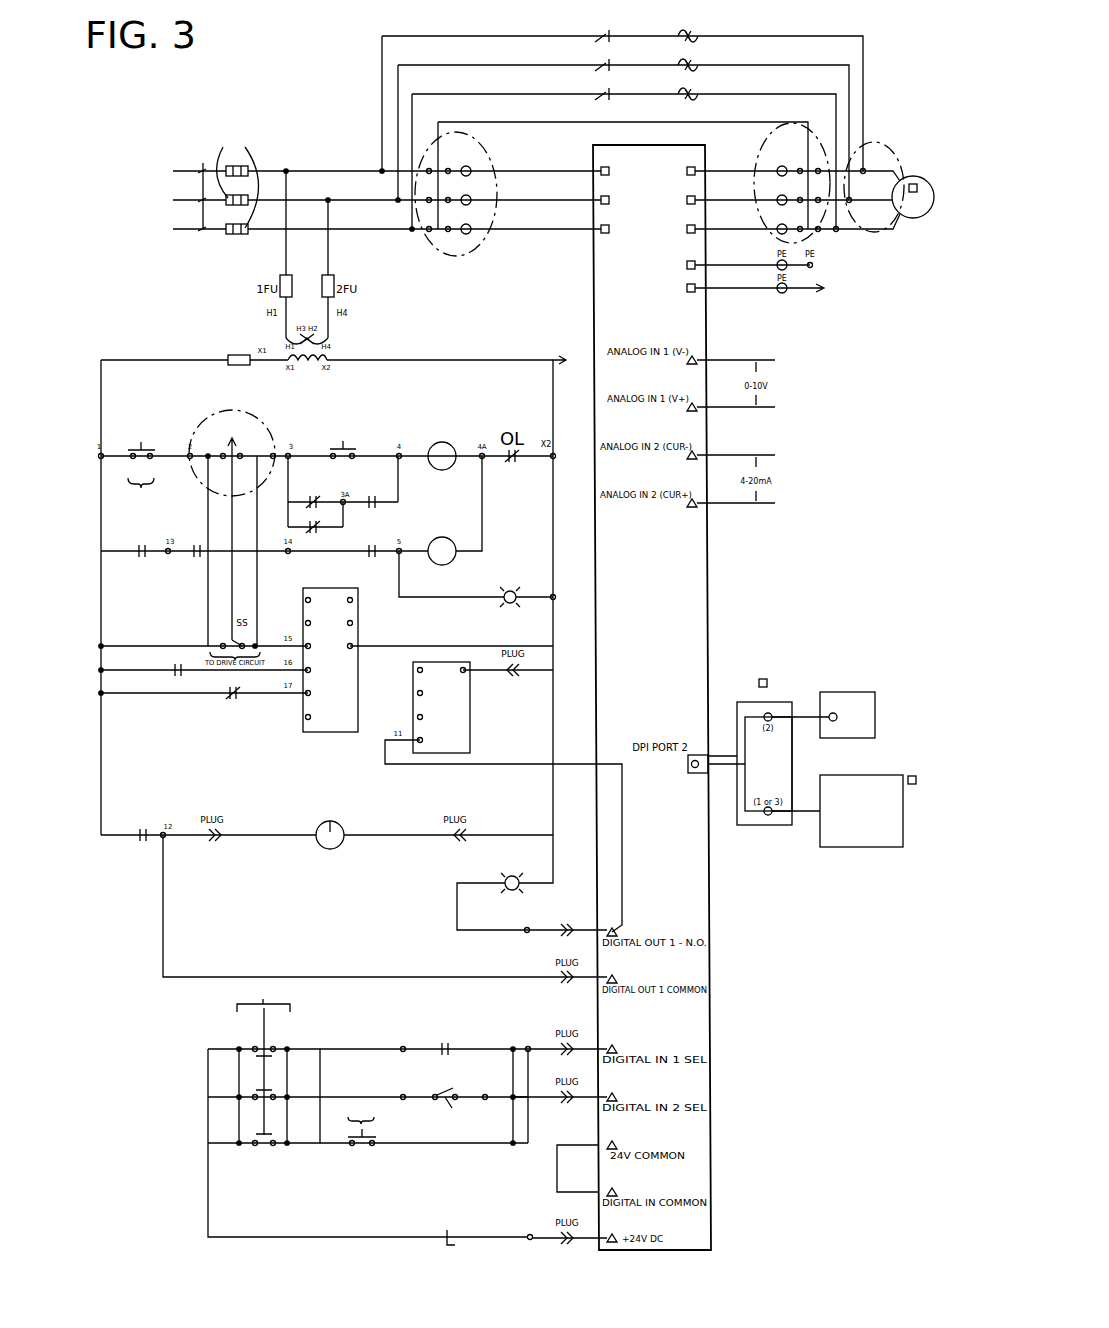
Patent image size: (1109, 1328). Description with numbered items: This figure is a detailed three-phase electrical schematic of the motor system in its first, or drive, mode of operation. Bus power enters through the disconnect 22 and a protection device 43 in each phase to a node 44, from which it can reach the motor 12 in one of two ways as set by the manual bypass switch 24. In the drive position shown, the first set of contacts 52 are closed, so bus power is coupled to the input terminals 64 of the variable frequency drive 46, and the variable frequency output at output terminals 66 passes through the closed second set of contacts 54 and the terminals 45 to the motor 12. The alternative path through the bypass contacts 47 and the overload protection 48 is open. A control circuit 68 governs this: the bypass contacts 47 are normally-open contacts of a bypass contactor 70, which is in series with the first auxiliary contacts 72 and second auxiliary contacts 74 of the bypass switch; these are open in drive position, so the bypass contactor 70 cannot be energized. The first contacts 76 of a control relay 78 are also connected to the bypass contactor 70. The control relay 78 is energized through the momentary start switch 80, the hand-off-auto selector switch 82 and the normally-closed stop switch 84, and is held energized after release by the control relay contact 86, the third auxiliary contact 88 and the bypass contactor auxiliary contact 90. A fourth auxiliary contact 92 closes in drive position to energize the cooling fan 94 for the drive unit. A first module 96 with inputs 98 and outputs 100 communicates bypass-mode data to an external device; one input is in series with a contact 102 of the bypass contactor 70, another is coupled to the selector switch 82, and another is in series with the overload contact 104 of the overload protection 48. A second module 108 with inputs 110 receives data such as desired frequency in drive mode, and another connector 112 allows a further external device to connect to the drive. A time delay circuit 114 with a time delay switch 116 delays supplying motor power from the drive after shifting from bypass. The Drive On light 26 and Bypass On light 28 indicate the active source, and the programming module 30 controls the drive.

The motor 12 is at (916, 219).
The disconnect 22 is at (203, 163).
The manual bypass switch 24 is at (751, 121).
The Drive On light 26 is at (505, 880).
The Bypass On light 28 is at (517, 593).
The programming module 30 is at (848, 848).
The protection device 43 is at (238, 165).
The node 44 is at (412, 228).
The motor terminal 45 is at (888, 143).
The variable frequency drive 46 is at (708, 566).
The bypass contacts 47 is at (600, 96).
The overload protection 48 is at (702, 24).
The first set of contacts 52 is at (490, 157).
The second set of contacts 54 is at (830, 140).
The input terminals 64 is at (612, 229).
The output terminals 66 is at (688, 229).
The control circuit 68 is at (105, 344).
The bypass contactor 70 is at (442, 537).
The first auxiliary contacts 72 is at (142, 560).
The second auxiliary contacts 74 is at (196, 560).
The first contacts 76 is at (370, 562).
The control relay 78 is at (445, 442).
The start switch 80 is at (367, 448).
The hand-off-auto selector switch 82 is at (228, 410).
The stop switch 84 is at (131, 441).
The control relay contact 86 is at (381, 498).
The third auxiliary contact 88 is at (323, 440).
The bypass contactor auxiliary contact 90 is at (318, 522).
The fourth auxiliary contact 92 is at (140, 843).
The cooling fan 94 is at (330, 822).
The first module 96 is at (358, 698).
The inputs 98 is at (307, 695).
The outputs 100 is at (305, 602).
The contact 102 is at (178, 664).
The overload contact 104 is at (232, 699).
The second module 108 is at (470, 735).
The inputs 110 is at (428, 718).
The connector 112 is at (833, 690).
The time delay circuit 114 is at (381, 1032).
The time delay switch 116 is at (448, 1106).